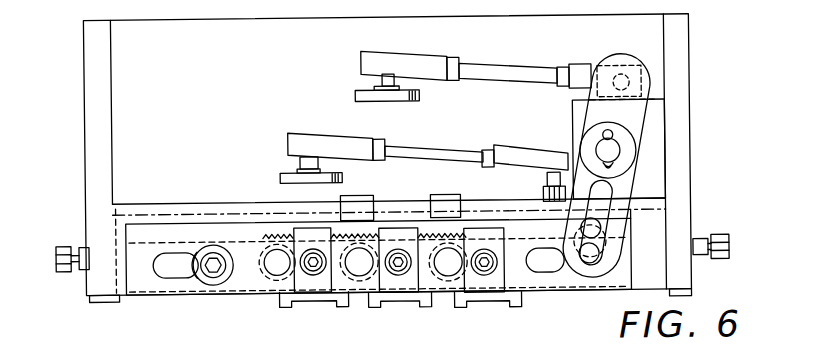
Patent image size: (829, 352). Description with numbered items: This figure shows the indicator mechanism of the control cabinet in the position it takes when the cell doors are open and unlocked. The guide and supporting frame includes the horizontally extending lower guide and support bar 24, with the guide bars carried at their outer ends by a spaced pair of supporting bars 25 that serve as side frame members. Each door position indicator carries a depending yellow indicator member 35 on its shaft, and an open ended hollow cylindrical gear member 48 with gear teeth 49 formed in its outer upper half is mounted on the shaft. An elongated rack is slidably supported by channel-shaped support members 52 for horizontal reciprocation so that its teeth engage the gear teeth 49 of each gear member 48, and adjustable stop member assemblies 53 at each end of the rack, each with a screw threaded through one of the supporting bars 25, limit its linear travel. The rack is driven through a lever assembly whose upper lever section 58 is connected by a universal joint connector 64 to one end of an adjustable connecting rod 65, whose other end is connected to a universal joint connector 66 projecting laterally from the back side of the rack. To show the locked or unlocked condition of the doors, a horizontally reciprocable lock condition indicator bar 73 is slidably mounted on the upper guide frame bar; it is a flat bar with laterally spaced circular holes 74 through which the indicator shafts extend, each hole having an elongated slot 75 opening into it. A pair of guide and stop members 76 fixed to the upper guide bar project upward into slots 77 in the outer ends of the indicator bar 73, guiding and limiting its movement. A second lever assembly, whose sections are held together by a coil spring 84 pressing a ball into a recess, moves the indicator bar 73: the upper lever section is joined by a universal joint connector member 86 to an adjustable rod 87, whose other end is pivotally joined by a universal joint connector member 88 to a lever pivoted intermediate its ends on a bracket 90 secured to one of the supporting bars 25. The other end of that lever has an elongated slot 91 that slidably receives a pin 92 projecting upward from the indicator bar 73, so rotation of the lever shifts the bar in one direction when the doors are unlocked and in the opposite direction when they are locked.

The lower guide and support bar 24 is at (143, 281).
The supporting bars 25 is at (97, 146).
The indicator member 35 is at (398, 310).
The hollow cylindrical gear member 48 is at (340, 299).
The gear teeth 49 is at (458, 268).
The channel-shaped support members 52 is at (340, 201).
The adjustable stop member assemblies 53 is at (700, 265).
The upper lever section 58 is at (345, 177).
The universal joint connector 64 is at (297, 162).
The adjustable connecting rod 65 is at (462, 151).
The universal joint connector 66 is at (548, 187).
The lock condition indicator bar 73 is at (213, 283).
The circular holes 74 is at (263, 284).
The elongated slot 75 is at (290, 294).
The guide and stop members 76 is at (218, 251).
The slots 77 is at (182, 253).
The coil spring 84 is at (645, 83).
The universal joint connector member 86 is at (373, 86).
The adjustable rod 87 is at (498, 63).
The universal joint connector member 88 is at (632, 64).
The bracket 90 is at (657, 138).
The elongated slot 91 is at (605, 187).
The pin 92 is at (600, 227).